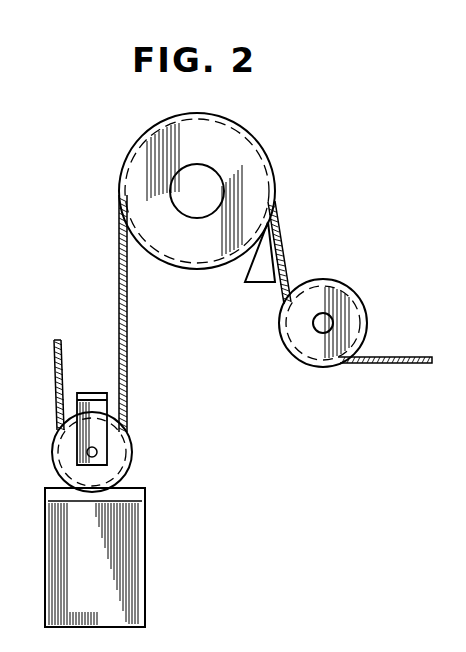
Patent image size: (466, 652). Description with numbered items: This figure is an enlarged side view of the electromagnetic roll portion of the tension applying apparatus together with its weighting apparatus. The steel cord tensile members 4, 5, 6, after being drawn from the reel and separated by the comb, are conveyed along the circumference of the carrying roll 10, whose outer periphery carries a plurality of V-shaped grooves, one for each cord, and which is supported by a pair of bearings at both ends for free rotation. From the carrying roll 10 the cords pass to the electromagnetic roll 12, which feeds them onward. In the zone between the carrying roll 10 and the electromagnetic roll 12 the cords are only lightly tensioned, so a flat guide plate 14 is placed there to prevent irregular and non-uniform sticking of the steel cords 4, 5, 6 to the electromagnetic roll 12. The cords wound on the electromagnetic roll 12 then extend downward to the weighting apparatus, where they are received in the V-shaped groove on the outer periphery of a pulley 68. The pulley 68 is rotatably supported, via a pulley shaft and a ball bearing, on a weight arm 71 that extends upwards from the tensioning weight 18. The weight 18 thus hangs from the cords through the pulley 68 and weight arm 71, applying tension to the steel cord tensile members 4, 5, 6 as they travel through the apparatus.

The electromagnetic roll 12 is at (250, 172).
The carrying roll 10 is at (336, 280).
The steel cord tensile member 4 is at (249, 313).
The steel cord tensile member 5 is at (249, 313).
The steel cord tensile member 6 is at (410, 356).
The flat guide plate 14 is at (256, 276).
The pulley 68 is at (128, 424).
The weight arm 71 is at (92, 392).
The tensioning weight 18 is at (143, 545).